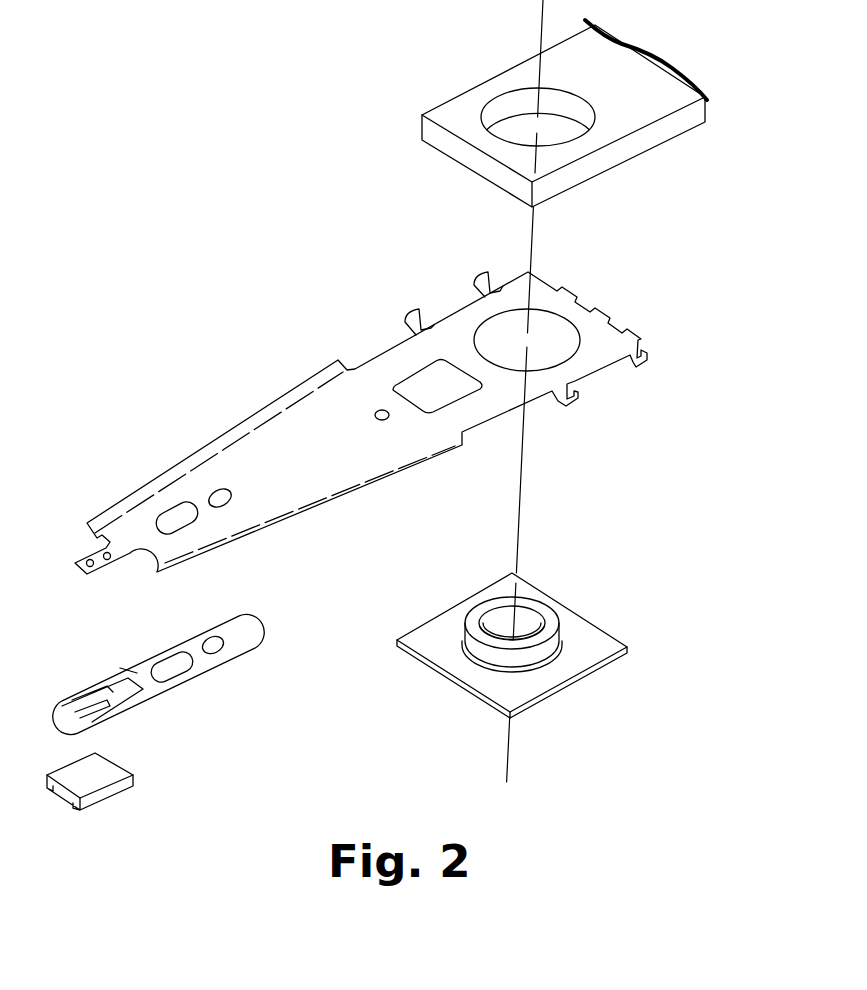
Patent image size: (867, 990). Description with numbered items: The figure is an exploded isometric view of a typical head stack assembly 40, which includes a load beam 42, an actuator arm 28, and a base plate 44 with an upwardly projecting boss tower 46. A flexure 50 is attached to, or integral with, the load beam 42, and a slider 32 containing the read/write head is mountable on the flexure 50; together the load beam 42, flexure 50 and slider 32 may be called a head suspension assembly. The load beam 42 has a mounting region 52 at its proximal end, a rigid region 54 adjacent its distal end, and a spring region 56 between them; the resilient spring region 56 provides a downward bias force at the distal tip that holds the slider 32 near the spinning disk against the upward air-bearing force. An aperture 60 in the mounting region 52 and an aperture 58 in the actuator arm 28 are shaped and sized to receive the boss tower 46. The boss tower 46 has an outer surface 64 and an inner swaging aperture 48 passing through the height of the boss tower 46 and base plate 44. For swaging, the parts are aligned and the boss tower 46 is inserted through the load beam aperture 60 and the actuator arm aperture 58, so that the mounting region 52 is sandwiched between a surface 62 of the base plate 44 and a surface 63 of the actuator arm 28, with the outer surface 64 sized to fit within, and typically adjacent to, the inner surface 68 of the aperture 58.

The head stack assembly 40 is at (312, 189).
The actuator arm 28 is at (584, 126).
The aperture of actuator arm 58 is at (528, 97).
The inner surface of aperture 68 is at (563, 103).
The surface of actuator arm 63 is at (679, 138).
The load beam 42 is at (363, 414).
The mounting region 52 is at (457, 323).
The spring region 56 is at (387, 367).
The rigid region 54 is at (248, 453).
The aperture of load beam 60 is at (568, 322).
The base plate 44 is at (505, 644).
The surface of base plate 62 is at (416, 641).
The boss tower 46 is at (482, 644).
The swaging aperture 48 is at (526, 612).
The outer surface of boss tower 64 is at (465, 640).
The flexure 50 is at (192, 690).
The slider 32 is at (126, 808).